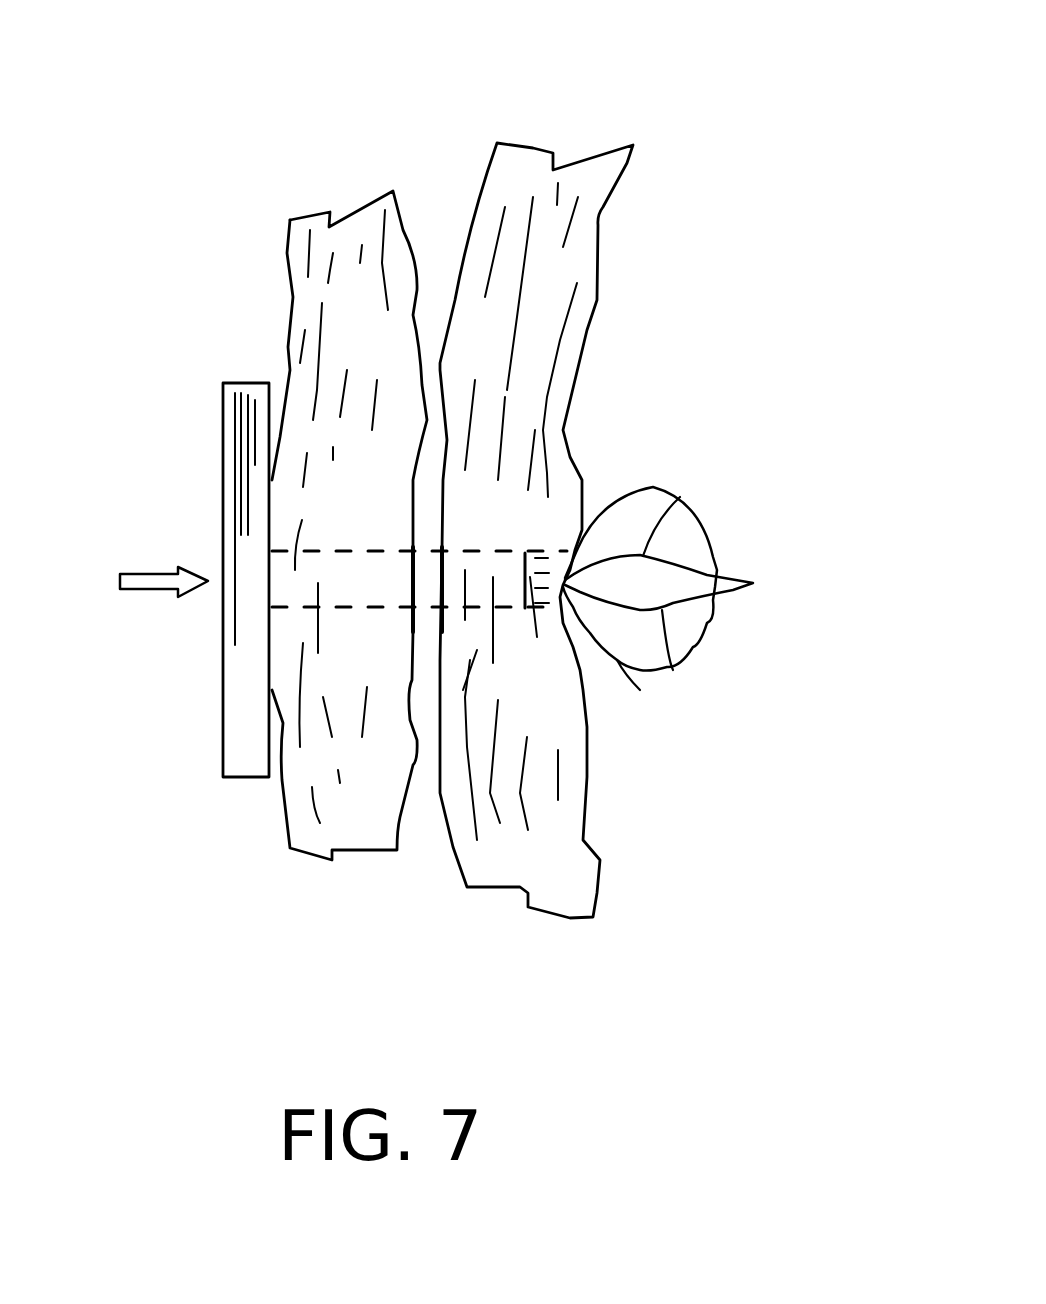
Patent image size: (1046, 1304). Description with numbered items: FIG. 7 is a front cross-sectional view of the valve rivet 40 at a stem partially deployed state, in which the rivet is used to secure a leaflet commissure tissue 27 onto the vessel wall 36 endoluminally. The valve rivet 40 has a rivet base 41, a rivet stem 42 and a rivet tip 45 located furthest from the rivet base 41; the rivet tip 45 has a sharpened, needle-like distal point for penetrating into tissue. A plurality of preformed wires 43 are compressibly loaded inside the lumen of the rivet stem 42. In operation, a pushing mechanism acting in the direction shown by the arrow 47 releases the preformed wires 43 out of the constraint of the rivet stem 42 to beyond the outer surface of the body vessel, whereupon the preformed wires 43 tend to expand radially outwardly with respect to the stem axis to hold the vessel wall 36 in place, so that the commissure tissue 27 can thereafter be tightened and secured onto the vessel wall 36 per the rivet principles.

The leaflet commissure tissue 27 is at (354, 217).
The vessel wall 36 is at (535, 150).
The valve rivet 40 is at (170, 496).
The rivet base 41 is at (245, 382).
The rivet stem 42 is at (373, 560).
The preformed wires 43 is at (642, 485).
The rivet tip 45 is at (733, 560).
The arrow 47 is at (145, 567).